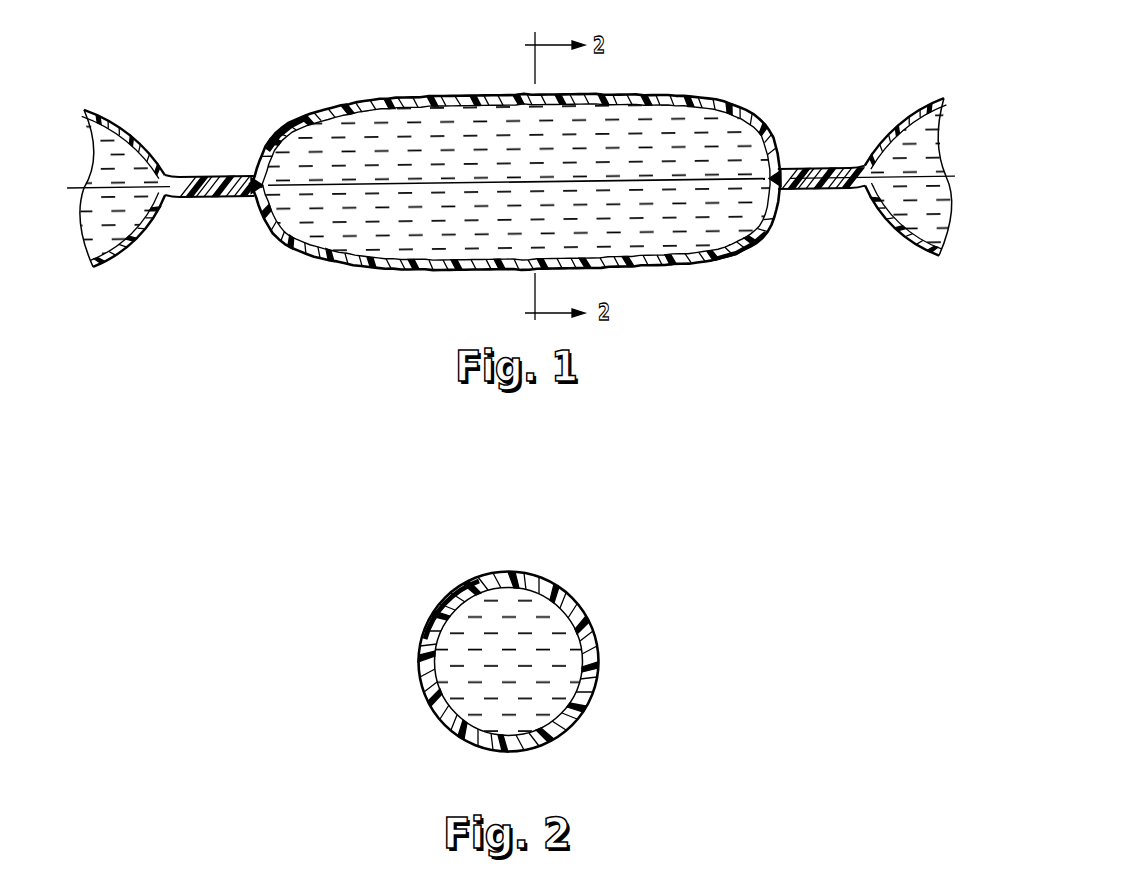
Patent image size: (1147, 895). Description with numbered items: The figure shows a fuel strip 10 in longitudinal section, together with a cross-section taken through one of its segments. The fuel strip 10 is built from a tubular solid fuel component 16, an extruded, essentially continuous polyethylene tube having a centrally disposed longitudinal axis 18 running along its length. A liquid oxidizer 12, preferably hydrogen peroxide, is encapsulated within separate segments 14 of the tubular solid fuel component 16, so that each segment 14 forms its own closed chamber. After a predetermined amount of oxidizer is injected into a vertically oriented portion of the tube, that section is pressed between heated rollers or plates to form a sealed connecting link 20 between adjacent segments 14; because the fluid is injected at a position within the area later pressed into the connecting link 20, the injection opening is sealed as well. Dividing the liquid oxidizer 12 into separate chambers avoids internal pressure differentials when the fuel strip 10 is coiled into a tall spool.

In FIG. 1, the fuel strip 10 is at (511, 176).
In FIG. 2, the fuel strip 10 is at (582, 644).
In FIG. 1, the liquid oxidizer 12 is at (628, 132).
In FIG. 2, the liquid oxidizer 12 is at (538, 697).
In FIG. 1, the segment 14 is at (390, 287).
In FIG. 1, the tubular solid fuel component 16 is at (487, 92).
In FIG. 2, the tubular solid fuel component 16 is at (568, 597).
In FIG. 1, the longitudinal axis 18 is at (73, 188).
In FIG. 1, the sealed connecting link 20 is at (188, 177).